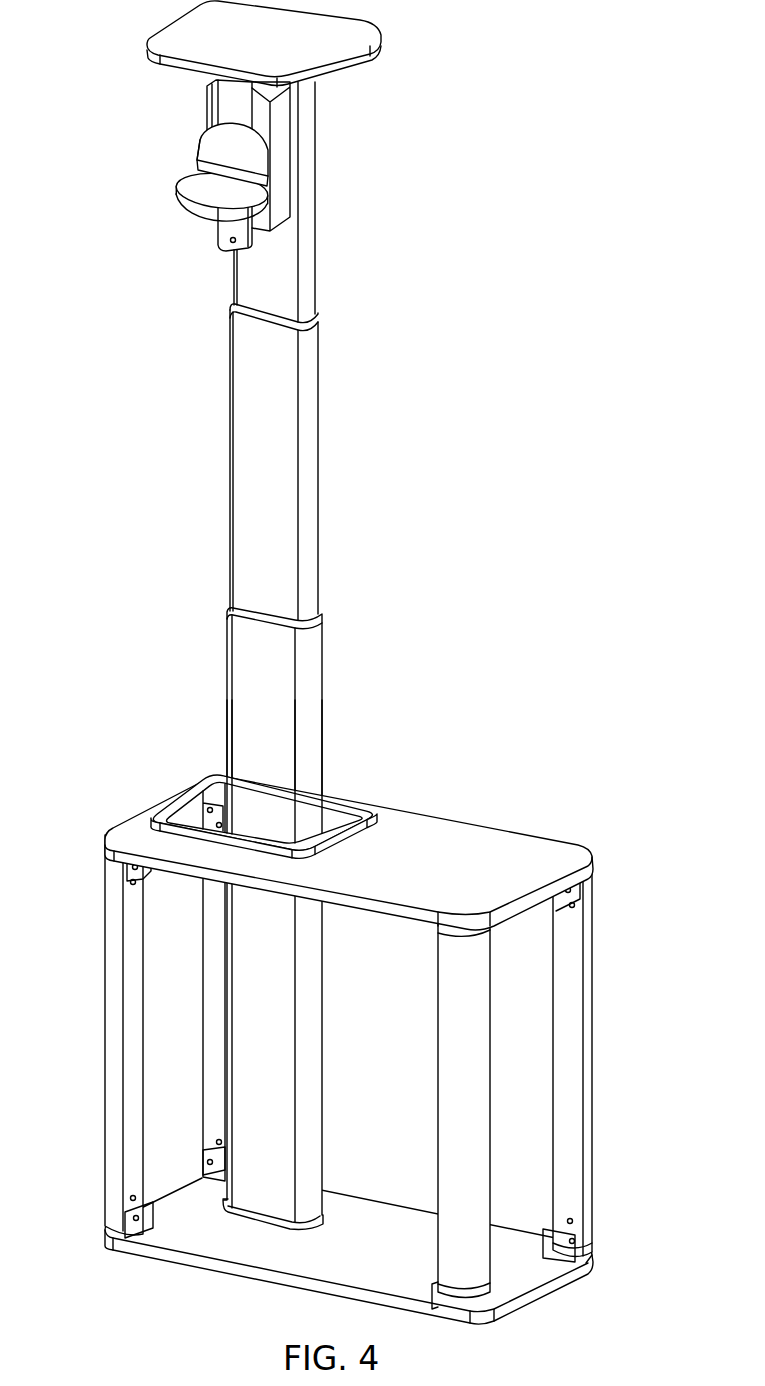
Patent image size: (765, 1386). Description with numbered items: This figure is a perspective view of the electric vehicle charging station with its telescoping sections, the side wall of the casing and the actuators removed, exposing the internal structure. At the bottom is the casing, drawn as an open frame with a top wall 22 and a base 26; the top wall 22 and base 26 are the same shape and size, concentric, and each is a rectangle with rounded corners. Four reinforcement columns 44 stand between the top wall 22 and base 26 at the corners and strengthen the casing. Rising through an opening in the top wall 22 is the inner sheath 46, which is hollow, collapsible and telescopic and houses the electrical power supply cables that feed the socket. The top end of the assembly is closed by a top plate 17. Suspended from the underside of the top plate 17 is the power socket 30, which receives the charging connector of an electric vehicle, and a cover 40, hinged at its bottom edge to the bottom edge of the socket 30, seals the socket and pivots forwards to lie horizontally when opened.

The top plate 17 is at (327, 44).
The power socket 30 is at (220, 150).
The cover 40 is at (183, 201).
The inner sheath 46 is at (273, 470).
The top wall 22 is at (452, 842).
The reinforcement columns 44 is at (117, 923).
The base 26 is at (238, 1243).